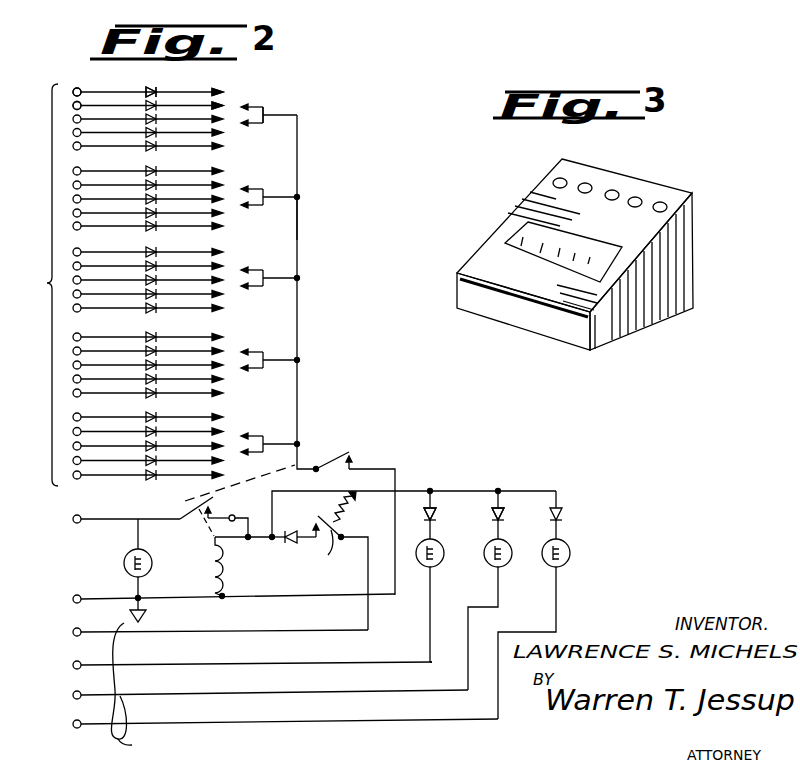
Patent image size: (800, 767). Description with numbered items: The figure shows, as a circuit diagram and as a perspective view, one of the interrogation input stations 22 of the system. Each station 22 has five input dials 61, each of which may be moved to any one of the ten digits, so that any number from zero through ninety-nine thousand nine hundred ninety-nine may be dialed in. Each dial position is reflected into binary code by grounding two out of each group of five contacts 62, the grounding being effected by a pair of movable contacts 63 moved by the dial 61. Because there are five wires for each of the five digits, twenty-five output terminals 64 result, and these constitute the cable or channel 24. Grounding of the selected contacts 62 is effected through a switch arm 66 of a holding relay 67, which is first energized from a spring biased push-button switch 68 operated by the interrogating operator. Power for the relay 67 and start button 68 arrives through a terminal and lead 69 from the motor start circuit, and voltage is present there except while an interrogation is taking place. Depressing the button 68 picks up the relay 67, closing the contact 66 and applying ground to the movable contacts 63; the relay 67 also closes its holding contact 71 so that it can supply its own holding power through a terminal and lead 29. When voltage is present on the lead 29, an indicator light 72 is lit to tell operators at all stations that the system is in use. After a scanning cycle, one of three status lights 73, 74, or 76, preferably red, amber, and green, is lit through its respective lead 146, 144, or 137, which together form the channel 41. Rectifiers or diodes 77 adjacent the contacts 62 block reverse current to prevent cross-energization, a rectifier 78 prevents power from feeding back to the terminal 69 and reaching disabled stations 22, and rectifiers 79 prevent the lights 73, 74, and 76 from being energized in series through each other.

In FIG. 2, the interrogation input station 22 is at (313, 225).
In FIG. 3, the interrogation input station 22 is at (709, 256).
In FIG. 2, the cable or channel 24 is at (47, 284).
In FIG. 2, the terminal and lead 29 is at (72, 520).
In FIG. 2, the channel 41 is at (134, 688).
In FIG. 2, the input dial 61 is at (284, 107).
In FIG. 3, the input dial 61 is at (545, 242).
In FIG. 2, the contacts 62 is at (218, 106).
In FIG. 2, the movable contacts 63 is at (258, 124).
In FIG. 2, the output terminals 64 is at (80, 108).
In FIG. 2, the switch arm 66 is at (334, 455).
In FIG. 2, the holding relay 67 is at (233, 566).
In FIG. 2, the push-button switch 68 is at (340, 561).
In FIG. 3, the push-button switch 68 is at (665, 204).
In FIG. 2, the terminal and lead 69 is at (72, 632).
In FIG. 2, the holding contact 71 is at (182, 514).
In FIG. 2, the indicator light 72 is at (123, 564).
In FIG. 3, the indicator light 72 is at (640, 198).
In FIG. 2, the status light 73 is at (436, 565).
In FIG. 3, the status light 73 is at (565, 178).
In FIG. 2, the status light 74 is at (504, 566).
In FIG. 3, the status light 74 is at (590, 184).
In FIG. 2, the status light 76 is at (562, 565).
In FIG. 3, the status light 76 is at (617, 191).
In FIG. 2, the rectifiers or diodes 77 is at (152, 108).
In FIG. 2, the rectifier 78 is at (292, 546).
In FIG. 2, the rectifiers 79 is at (492, 516).
In FIG. 2, the lead 137 is at (74, 727).
In FIG. 2, the lead 144 is at (74, 698).
In FIG. 2, the lead 146 is at (72, 665).